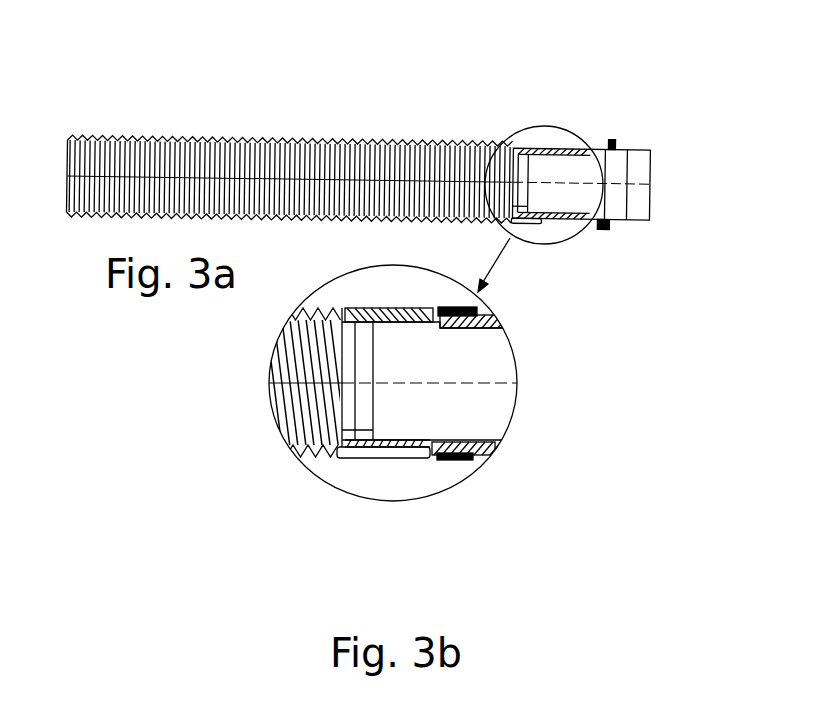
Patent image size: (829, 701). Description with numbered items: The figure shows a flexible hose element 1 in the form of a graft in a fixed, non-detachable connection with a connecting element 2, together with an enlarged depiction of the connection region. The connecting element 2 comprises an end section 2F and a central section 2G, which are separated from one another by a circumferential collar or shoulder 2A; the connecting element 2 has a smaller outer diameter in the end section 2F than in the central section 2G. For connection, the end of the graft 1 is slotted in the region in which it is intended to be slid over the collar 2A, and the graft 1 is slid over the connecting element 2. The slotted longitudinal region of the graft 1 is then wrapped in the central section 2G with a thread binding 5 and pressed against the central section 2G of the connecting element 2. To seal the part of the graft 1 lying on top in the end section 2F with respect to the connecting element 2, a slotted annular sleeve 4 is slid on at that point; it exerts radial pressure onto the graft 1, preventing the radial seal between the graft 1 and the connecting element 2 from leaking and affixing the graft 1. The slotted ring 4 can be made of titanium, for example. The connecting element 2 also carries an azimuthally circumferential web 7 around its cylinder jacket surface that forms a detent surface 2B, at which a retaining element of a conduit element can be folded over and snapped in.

In FIG. 3a, the flexible hose element 1 is at (200, 140).
In FIG. 3b, the flexible hose element 1 is at (290, 357).
In FIG. 3a, the connecting element 2 is at (581, 181).
In FIG. 3b, the connecting element 2 is at (461, 452).
In FIG. 3a, the collar 2A is at (563, 147).
In FIG. 3b, the collar 2A is at (443, 457).
In FIG. 3a, the detent surface 2B is at (609, 136).
In FIG. 3a, the end section 2F is at (532, 216).
In FIG. 3b, the end section 2F is at (403, 458).
In FIG. 3a, the central section 2G is at (588, 224).
In FIG. 3b, the central section 2G is at (490, 453).
In FIG. 3a, the slotted annular sleeve 4 is at (515, 148).
In FIG. 3b, the slotted annular sleeve 4 is at (367, 458).
In FIG. 3a, the thread binding 5 is at (582, 145).
In FIG. 3b, the thread binding 5 is at (493, 320).
In FIG. 3a, the web 7 is at (605, 222).